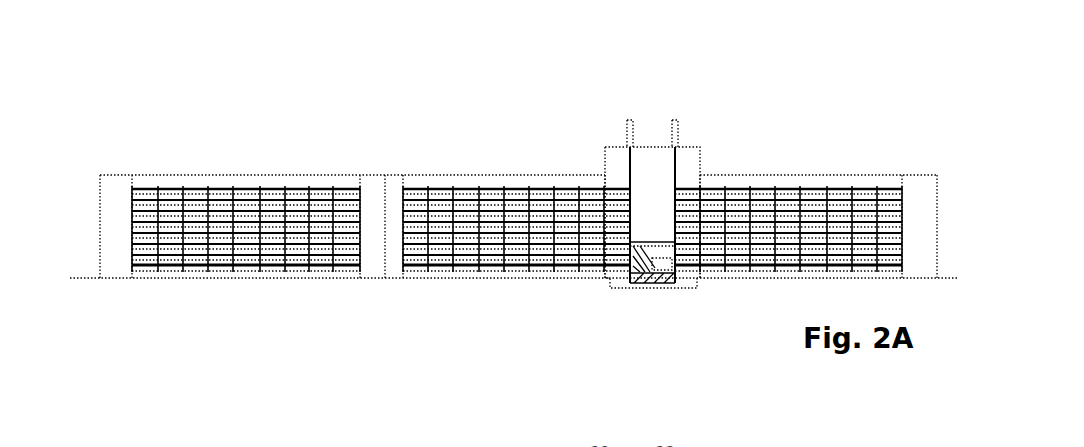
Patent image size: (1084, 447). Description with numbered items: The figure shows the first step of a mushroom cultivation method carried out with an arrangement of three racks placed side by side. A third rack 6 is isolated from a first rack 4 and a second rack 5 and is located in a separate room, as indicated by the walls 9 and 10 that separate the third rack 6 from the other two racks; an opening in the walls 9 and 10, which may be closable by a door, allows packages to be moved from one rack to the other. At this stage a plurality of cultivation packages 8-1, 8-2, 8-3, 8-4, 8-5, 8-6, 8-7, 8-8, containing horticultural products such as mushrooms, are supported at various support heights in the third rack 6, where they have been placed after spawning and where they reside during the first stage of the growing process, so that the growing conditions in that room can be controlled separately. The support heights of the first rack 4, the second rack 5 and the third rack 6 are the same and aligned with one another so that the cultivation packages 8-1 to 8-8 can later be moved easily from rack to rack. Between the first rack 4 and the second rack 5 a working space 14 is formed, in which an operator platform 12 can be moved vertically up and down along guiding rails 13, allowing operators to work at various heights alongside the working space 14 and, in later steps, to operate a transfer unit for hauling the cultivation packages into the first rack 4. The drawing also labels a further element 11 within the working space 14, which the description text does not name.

The wall 10 is at (132, 214).
The cultivation package 8-1 is at (132, 190).
The cultivation package 8-2 is at (132, 200).
The cultivation package 8-3 is at (132, 209).
The cultivation package 8-4 is at (132, 222).
The cultivation package 8-5 is at (132, 232).
The cultivation package 8-6 is at (132, 243).
The cultivation package 8-7 is at (132, 253).
The cultivation package 8-8 is at (132, 265).
The third rack 6 is at (267, 176).
The wall 9 is at (372, 186).
The first rack 4 is at (513, 176).
The second rack 5 is at (800, 178).
The working space 14 is at (645, 168).
The guiding rails 13 is at (623, 120).
The connector body 11 is at (658, 238).
The operator platform 12 is at (666, 283).